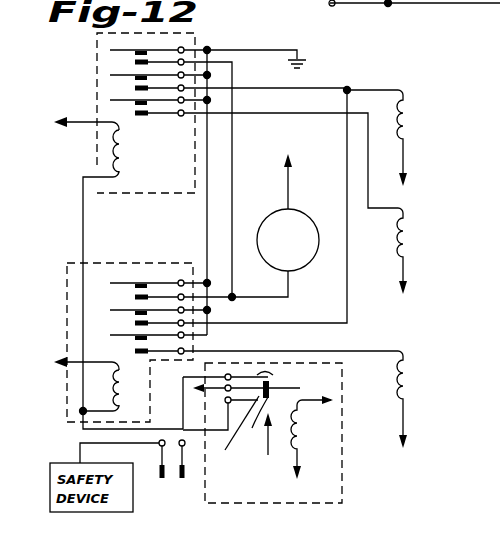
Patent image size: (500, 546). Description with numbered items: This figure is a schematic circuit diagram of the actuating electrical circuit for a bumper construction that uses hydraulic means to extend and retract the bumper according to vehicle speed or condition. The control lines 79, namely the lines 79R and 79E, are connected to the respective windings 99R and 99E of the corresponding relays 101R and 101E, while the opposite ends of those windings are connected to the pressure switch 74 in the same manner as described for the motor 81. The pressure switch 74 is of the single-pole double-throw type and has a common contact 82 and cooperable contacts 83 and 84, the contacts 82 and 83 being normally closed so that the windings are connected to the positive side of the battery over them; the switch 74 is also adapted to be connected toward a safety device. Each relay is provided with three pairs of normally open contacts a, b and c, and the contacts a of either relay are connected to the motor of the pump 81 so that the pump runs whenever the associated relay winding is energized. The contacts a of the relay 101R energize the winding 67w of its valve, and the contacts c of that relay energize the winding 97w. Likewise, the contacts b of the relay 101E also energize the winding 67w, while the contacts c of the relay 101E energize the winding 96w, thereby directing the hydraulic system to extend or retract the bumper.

The line 79 is at (466, 3).
The line 79R is at (93, 122).
The line 79E is at (76, 360).
The winding 99R is at (124, 151).
The winding 99E is at (100, 392).
The relay 101R is at (183, 205).
The relay 101E is at (102, 261).
The motor 81 is at (297, 210).
The winding of the valve 67w is at (407, 117).
The winding of the valve 97w is at (406, 242).
The winding of the valve 96w is at (408, 385).
The contact 84 is at (279, 374).
The common contact 82 is at (253, 417).
The contact 83 is at (234, 439).
The pressure switch 74 is at (286, 433).